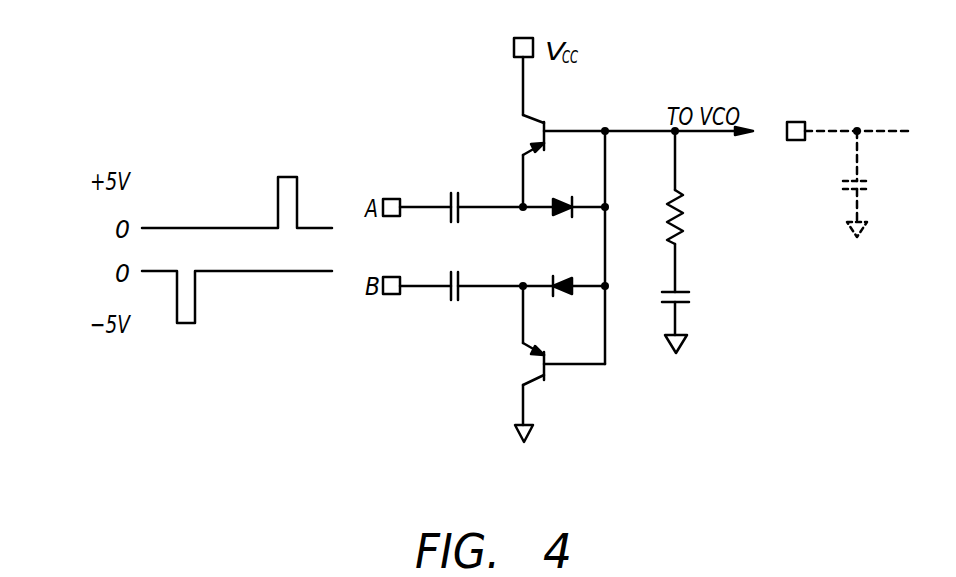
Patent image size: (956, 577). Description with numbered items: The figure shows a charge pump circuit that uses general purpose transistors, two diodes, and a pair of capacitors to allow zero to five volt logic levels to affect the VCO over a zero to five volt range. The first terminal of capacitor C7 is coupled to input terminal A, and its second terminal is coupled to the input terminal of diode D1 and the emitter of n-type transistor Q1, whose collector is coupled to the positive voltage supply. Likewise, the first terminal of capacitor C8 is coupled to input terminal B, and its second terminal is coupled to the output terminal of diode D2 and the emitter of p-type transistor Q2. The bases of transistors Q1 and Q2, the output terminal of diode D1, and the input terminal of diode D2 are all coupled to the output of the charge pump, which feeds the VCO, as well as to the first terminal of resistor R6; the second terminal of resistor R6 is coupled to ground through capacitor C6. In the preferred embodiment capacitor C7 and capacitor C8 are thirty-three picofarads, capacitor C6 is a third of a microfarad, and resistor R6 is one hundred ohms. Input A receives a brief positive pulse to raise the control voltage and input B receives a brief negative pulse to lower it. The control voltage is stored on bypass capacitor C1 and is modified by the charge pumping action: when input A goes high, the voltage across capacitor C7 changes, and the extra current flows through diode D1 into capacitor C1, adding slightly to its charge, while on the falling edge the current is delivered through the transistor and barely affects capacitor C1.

The n-type transistor Q1 is at (523, 161).
The p-type transistor Q2 is at (522, 364).
The capacitor C7 is at (454, 196).
The capacitor C8 is at (454, 273).
The diode D1 is at (565, 193).
The diode D2 is at (566, 271).
The resistor R6 is at (693, 211).
The capacitor C6 is at (695, 317).
The bypass capacitor C1 is at (875, 184).